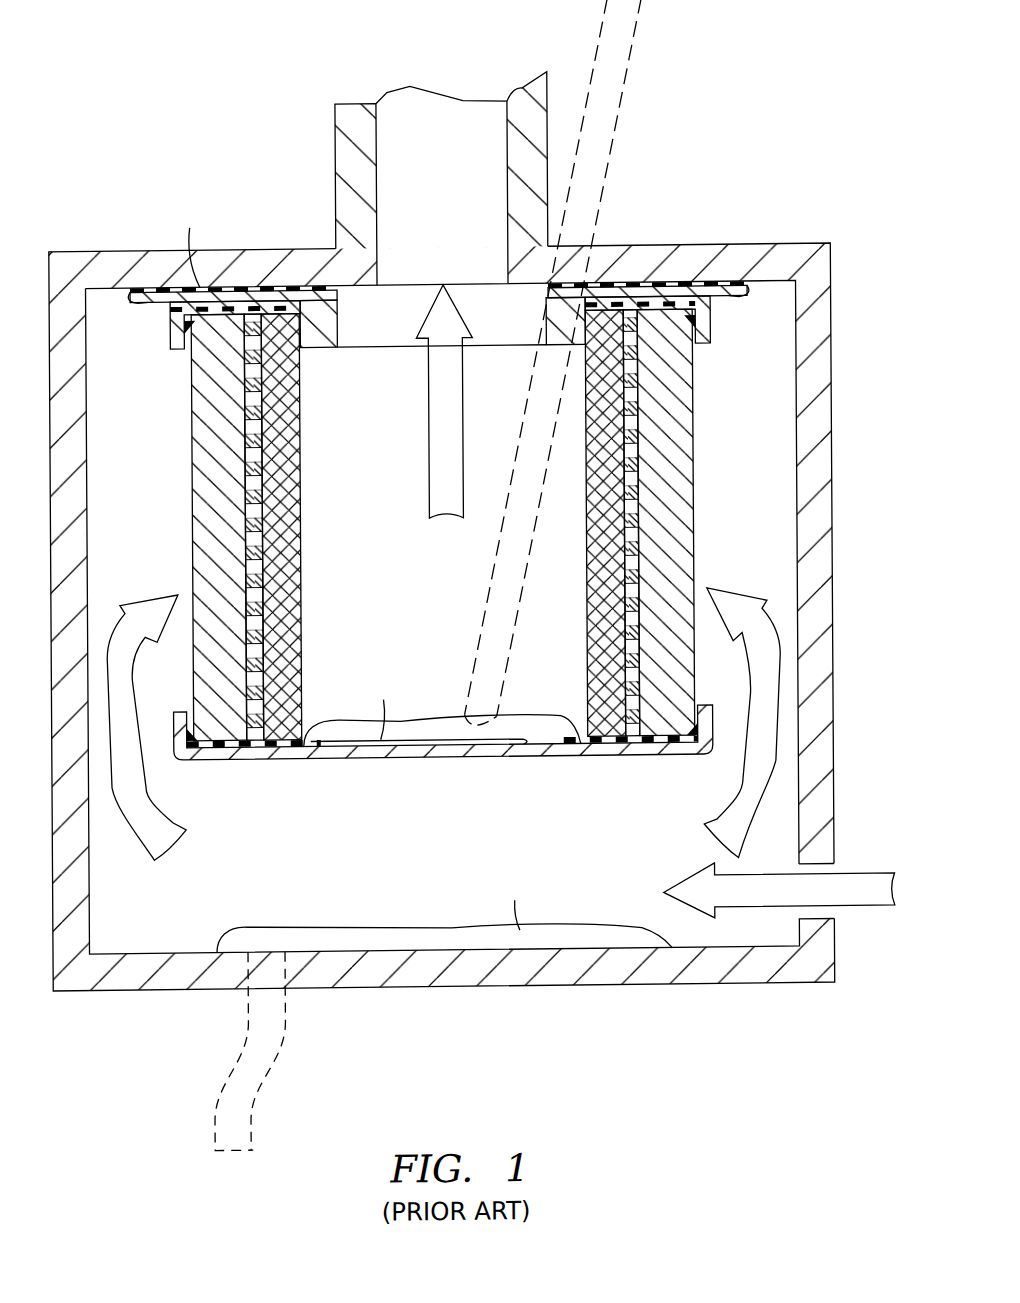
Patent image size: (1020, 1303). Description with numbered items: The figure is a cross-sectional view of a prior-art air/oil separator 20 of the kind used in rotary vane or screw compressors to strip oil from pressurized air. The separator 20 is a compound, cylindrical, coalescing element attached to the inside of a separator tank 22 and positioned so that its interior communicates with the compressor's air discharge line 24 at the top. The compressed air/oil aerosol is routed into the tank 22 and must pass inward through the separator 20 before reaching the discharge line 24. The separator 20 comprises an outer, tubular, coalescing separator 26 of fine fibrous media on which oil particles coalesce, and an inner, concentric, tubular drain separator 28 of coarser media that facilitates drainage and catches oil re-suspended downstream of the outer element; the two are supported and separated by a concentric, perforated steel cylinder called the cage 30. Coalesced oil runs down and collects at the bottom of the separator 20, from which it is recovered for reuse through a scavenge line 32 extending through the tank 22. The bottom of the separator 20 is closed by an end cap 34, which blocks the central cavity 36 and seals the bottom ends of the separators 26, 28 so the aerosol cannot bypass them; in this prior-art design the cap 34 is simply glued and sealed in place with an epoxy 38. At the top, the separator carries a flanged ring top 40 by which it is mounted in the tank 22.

The air/oil separator 20 is at (764, 422).
The separator tank 22 is at (822, 326).
The air discharge line 24 is at (525, 106).
The outer coalescing separator 26 is at (684, 526).
The inner drain separator 28 is at (590, 624).
The cage 30 is at (259, 494).
The scavenge line 32 is at (496, 601).
The end cap 34 is at (344, 759).
The central cavity 36 is at (362, 627).
The epoxy 38 is at (699, 316).
The flanged ring top 40 is at (702, 303).